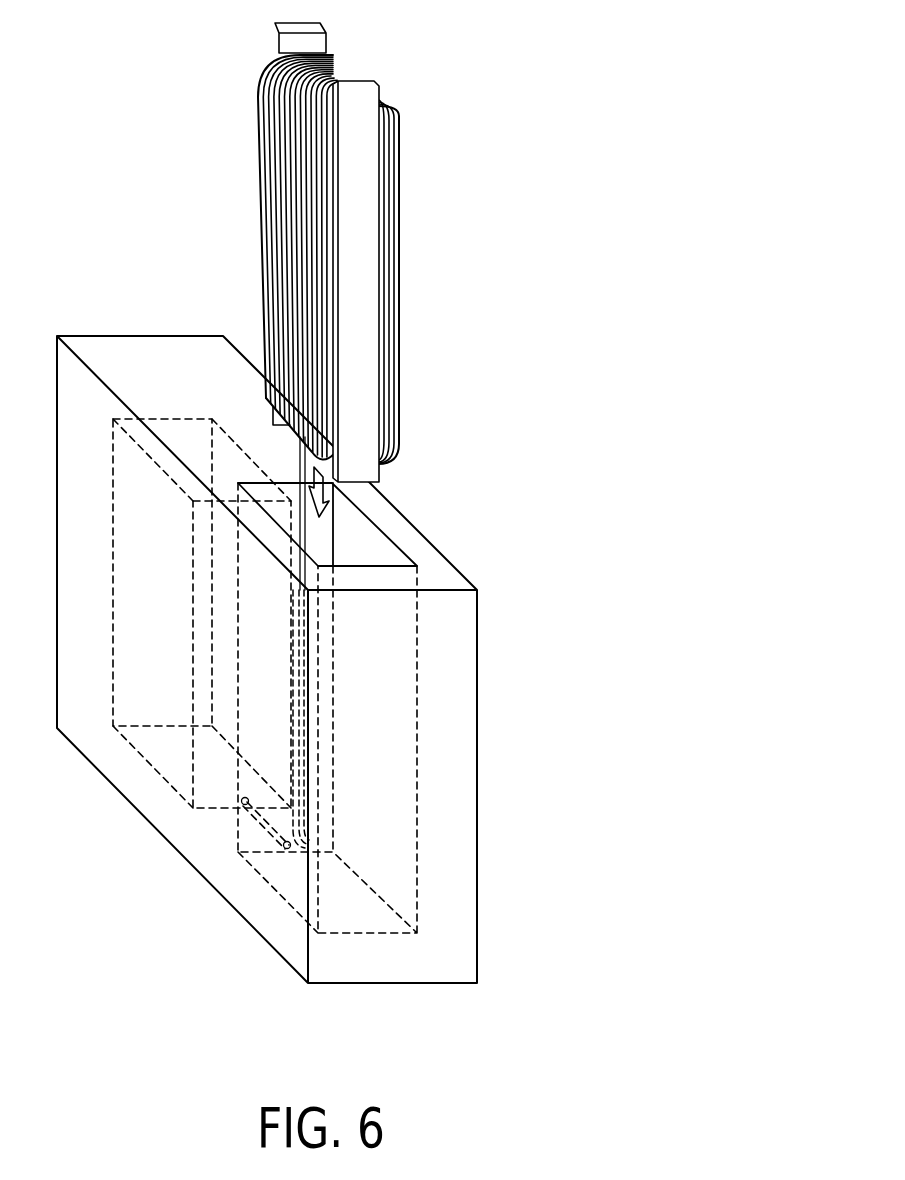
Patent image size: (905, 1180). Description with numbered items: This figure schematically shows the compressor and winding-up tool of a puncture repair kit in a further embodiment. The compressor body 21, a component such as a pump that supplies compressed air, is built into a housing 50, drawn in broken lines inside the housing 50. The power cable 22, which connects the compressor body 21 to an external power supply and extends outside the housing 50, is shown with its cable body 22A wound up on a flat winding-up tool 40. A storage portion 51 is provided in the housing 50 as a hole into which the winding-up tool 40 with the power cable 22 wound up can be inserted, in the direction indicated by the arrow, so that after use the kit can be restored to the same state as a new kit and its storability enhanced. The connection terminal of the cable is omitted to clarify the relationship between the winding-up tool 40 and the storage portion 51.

The compressor body 21 is at (172, 762).
The power cable 22 is at (388, 290).
The cable body 22A is at (414, 243).
The winding-up tool 40 is at (362, 103).
The housing 50 is at (498, 786).
The storage portion 51 is at (390, 557).